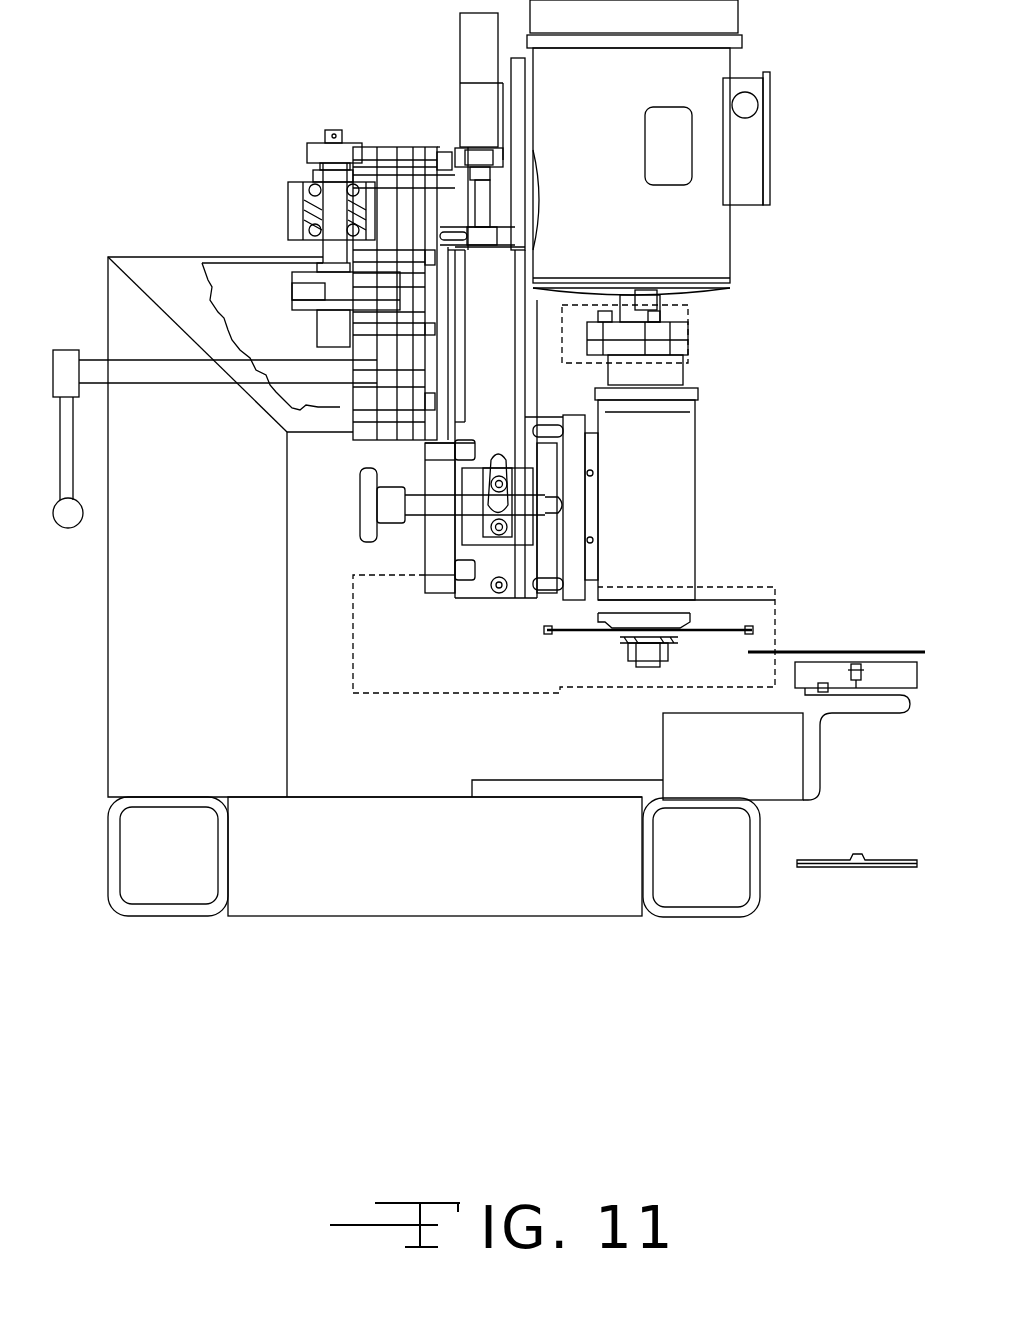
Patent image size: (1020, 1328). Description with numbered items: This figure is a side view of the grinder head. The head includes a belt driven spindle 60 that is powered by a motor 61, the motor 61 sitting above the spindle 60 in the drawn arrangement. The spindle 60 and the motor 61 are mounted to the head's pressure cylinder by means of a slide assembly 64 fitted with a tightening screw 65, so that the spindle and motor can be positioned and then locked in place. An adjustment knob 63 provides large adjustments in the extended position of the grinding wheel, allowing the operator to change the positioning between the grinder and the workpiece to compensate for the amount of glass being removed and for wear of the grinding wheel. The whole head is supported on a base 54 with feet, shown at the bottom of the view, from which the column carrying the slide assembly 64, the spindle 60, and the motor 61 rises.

The base 54 is at (553, 895).
The spindle 60 is at (677, 463).
The motor 61 is at (700, 72).
The adjustment knob 63 is at (397, 510).
The slide assembly 64 is at (503, 570).
The tightening screw 65 is at (500, 510).